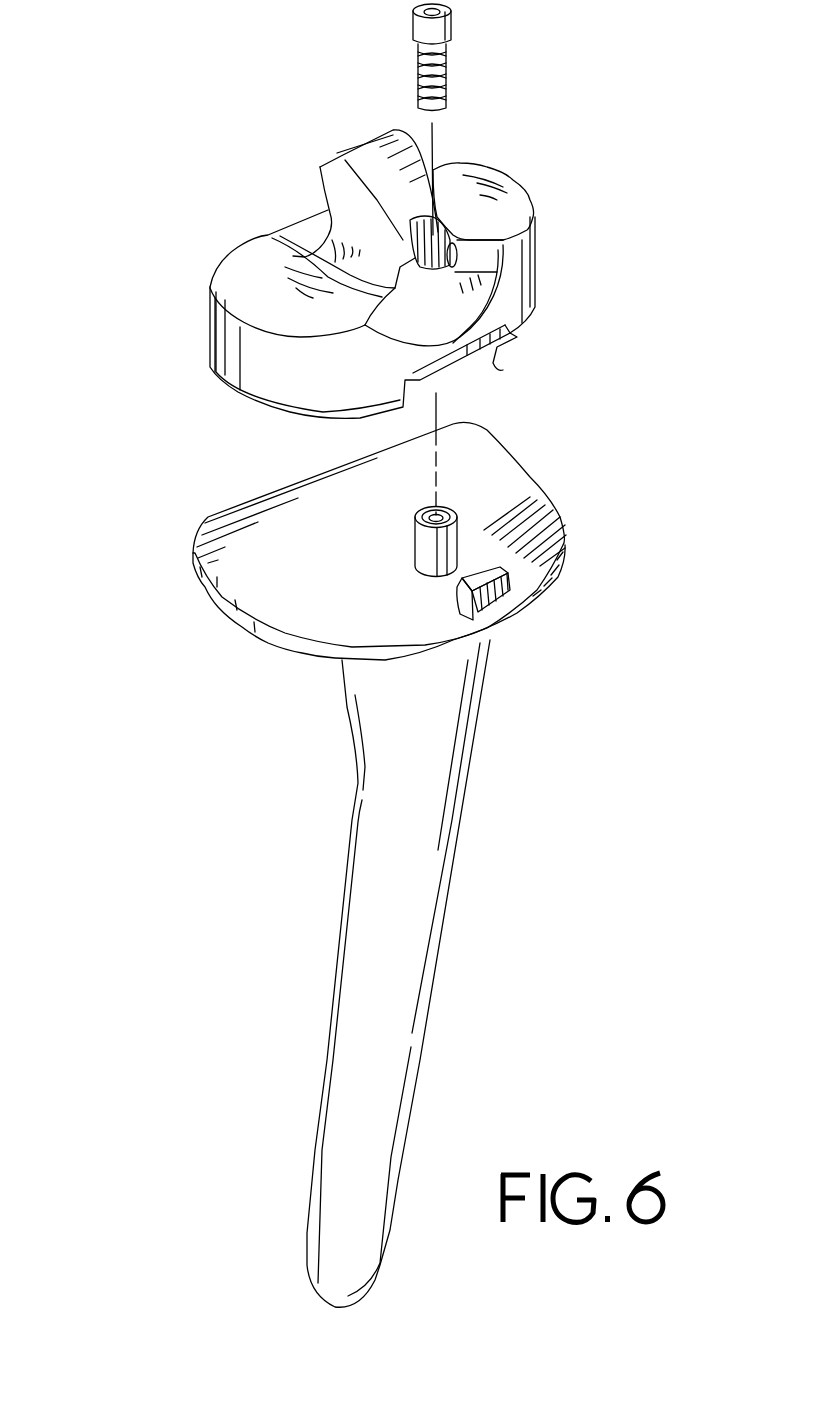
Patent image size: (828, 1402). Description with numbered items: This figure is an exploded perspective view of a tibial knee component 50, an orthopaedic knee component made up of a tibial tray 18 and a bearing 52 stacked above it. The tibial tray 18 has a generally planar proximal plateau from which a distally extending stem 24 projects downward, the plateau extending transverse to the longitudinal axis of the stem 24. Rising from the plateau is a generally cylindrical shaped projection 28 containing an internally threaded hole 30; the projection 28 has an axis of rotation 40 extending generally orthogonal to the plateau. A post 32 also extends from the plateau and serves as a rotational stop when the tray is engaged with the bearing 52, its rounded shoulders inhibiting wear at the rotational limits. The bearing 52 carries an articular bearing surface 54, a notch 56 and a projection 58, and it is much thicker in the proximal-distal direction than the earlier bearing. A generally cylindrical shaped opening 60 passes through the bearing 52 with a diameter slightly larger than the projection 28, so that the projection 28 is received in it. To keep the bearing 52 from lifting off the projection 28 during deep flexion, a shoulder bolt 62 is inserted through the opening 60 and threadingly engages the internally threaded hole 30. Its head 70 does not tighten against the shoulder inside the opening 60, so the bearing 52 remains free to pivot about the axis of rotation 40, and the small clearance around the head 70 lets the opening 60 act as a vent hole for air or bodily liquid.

The tibial tray 18 is at (612, 537).
The stem 24 is at (432, 973).
The projection 28 is at (412, 543).
The internally threaded hole 30 is at (453, 517).
The post 32 is at (487, 593).
The axis of rotation 40 is at (440, 473).
The tibial knee component 50 is at (158, 321).
The bearing 52 is at (578, 231).
The articular bearing surface 54 is at (252, 273).
The notch 56 is at (500, 350).
The projection 58 is at (370, 147).
The opening 60 is at (448, 270).
The shoulder bolt 62 is at (470, 20).
The head 70 is at (411, 22).